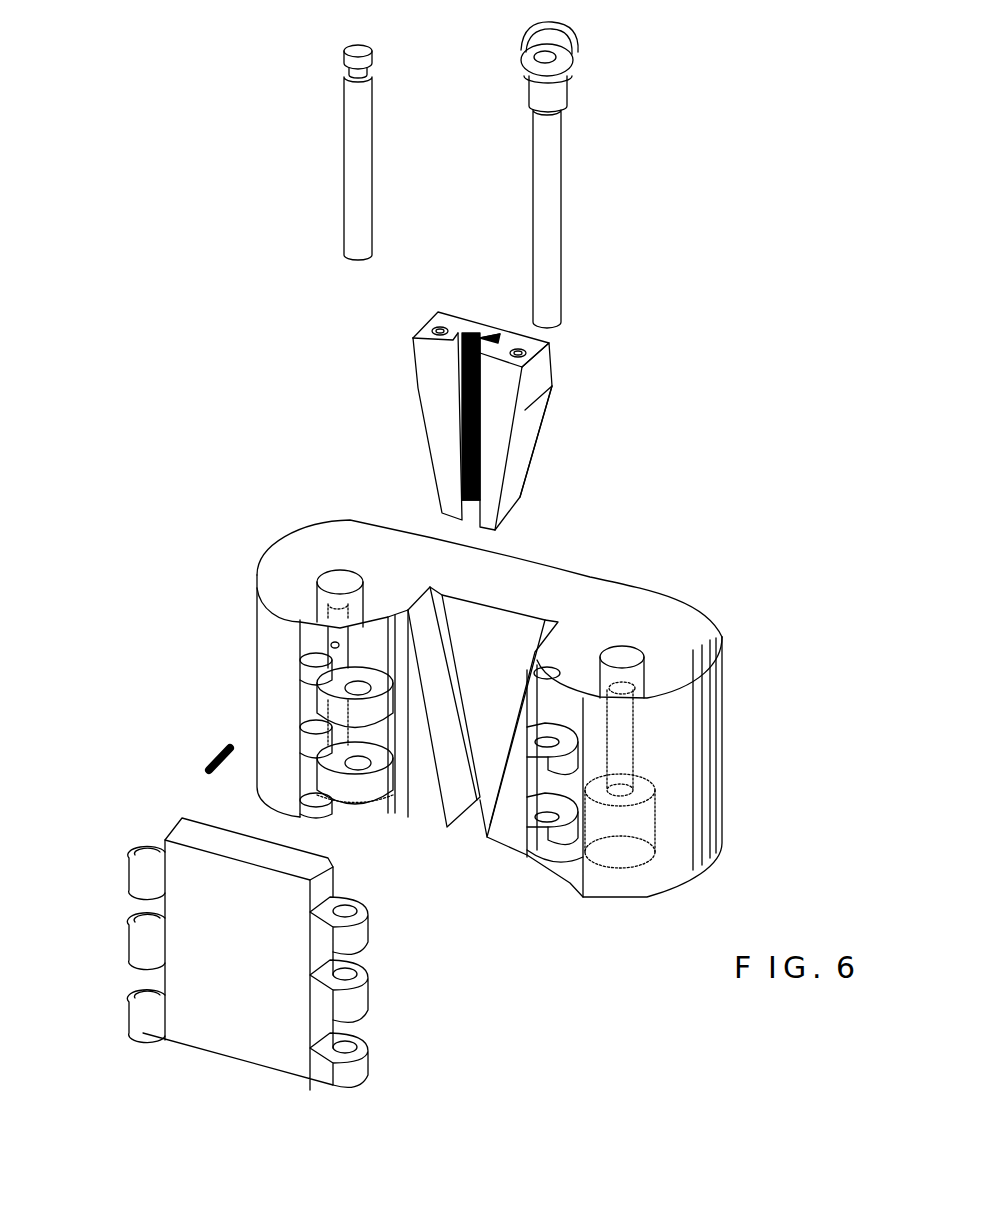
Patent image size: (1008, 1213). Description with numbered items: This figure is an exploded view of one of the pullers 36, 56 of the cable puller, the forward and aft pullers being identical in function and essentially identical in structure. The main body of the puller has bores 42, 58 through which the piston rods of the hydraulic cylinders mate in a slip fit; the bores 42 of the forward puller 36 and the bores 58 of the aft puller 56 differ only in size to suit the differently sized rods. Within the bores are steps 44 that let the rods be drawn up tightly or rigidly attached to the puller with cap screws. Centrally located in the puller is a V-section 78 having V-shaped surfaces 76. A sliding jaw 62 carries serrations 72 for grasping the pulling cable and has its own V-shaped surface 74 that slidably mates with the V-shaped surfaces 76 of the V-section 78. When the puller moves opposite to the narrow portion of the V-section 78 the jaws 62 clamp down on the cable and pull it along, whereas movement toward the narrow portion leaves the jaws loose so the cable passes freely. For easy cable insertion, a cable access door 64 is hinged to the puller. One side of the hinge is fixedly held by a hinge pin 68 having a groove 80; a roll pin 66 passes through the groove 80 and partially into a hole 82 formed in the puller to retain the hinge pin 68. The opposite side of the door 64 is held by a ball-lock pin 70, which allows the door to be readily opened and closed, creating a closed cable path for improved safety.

The forward puller 36 is at (542, 682).
The aft puller 56 is at (542, 682).
The bores 42 is at (758, 640).
The bores 58 is at (642, 657).
The steps 44 is at (633, 730).
The sliding jaws 62 is at (544, 372).
The cable access door 64 is at (168, 835).
The roll pin 66 is at (212, 753).
The hinge pin 68 is at (340, 138).
The ball-lock pin 70 is at (558, 138).
The serrations 72 is at (488, 335).
The V-shaped surface 74 is at (537, 442).
The V-shaped surfaces 76 is at (430, 625).
The V-section 78 is at (500, 630).
The groove 80 is at (372, 62).
The hole 82 is at (333, 642).